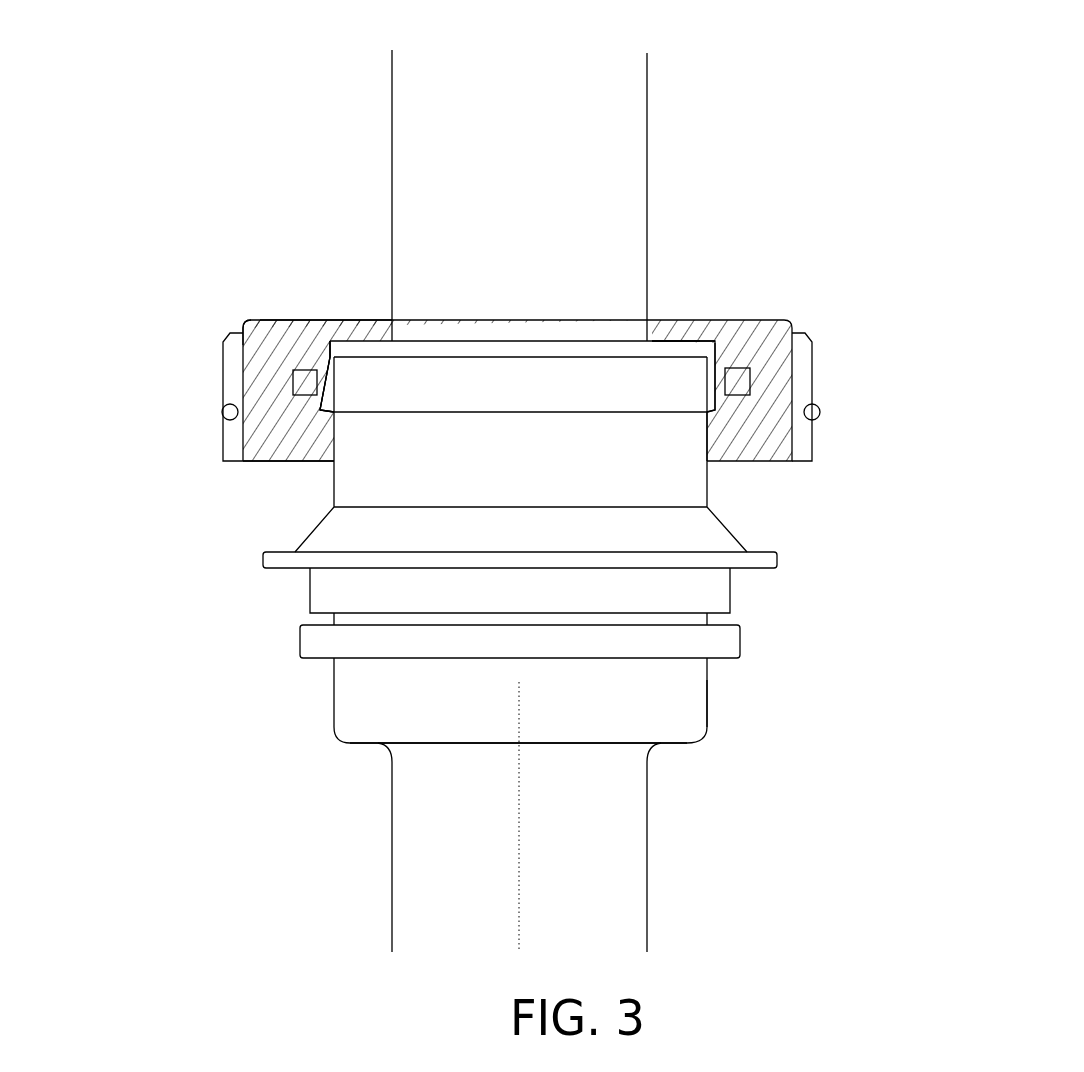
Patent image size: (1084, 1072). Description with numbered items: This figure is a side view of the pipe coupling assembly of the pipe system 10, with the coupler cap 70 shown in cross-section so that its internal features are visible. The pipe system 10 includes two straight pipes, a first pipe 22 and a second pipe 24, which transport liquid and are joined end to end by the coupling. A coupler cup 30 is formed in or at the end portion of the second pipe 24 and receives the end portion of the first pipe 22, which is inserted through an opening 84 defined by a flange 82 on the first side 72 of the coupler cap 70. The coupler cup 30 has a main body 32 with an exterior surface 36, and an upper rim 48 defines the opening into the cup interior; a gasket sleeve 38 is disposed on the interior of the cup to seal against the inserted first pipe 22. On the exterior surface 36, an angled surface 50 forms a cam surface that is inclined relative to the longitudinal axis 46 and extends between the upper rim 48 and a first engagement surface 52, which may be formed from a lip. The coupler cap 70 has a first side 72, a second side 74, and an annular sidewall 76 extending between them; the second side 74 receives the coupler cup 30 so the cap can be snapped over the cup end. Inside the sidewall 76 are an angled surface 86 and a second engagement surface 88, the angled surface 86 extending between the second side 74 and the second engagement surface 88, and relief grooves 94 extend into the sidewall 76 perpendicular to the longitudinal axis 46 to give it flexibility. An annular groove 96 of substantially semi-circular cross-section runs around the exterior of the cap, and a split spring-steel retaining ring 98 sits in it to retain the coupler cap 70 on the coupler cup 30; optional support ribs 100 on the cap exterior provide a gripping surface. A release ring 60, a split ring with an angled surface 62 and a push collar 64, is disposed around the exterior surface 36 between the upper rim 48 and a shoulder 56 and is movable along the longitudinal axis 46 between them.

The pipe system 10 is at (81, 71).
The first pipe 22 is at (650, 87).
The second pipe 24 is at (643, 935).
The coupler cup 30 is at (702, 741).
The main body 32 is at (707, 680).
The exterior surface 36 is at (682, 698).
The gasket sleeve 38 is at (670, 345).
The longitudinal axis 46 is at (519, 827).
The upper rim 48 is at (359, 347).
The angled surface 50 is at (333, 361).
The first engagement surface 52 is at (317, 415).
The shoulder 56 is at (300, 640).
The release ring 60 is at (733, 597).
The angled surface 62 is at (727, 528).
The push collar 64 is at (777, 560).
The coupler cap 70 is at (773, 313).
The first side 72 is at (263, 322).
The second side 74 is at (293, 460).
The sidewall 76 is at (245, 345).
The flange 82 is at (386, 330).
The opening 84 is at (505, 325).
The angled surface 86 is at (715, 445).
The second engagement surface 88 is at (715, 410).
The relief groove 94 is at (750, 373).
The annular groove 96 is at (228, 422).
The retaining ring 98 is at (815, 415).
The support ribs 100 is at (813, 367).